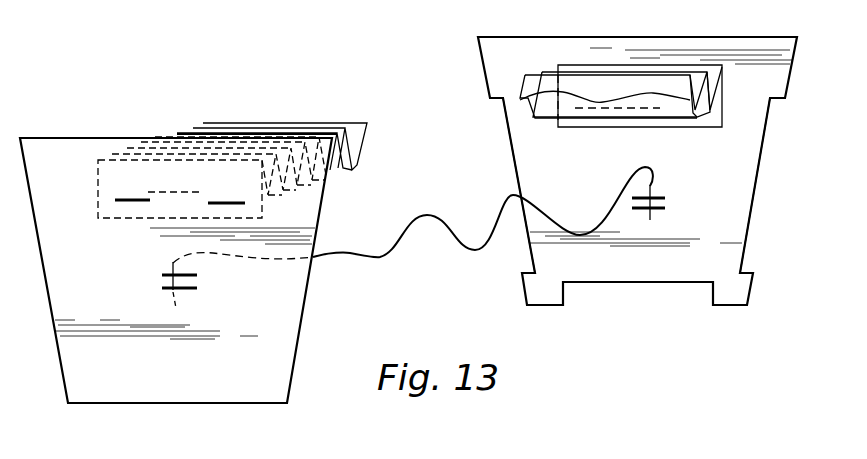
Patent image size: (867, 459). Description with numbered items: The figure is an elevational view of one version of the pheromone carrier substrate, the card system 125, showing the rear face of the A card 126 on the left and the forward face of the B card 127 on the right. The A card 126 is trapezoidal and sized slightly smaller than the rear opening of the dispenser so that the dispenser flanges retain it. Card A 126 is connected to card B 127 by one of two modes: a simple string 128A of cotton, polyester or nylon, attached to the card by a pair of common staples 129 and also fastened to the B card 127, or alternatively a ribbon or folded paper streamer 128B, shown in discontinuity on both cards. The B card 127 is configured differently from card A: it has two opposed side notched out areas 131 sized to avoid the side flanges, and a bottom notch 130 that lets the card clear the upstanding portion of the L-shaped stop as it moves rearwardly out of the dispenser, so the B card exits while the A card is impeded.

The card system 125 is at (603, 372).
The A card 126 is at (152, 368).
The B card 127 is at (572, 172).
The string 128A is at (403, 230).
The folded paper streamer 128B is at (575, 67).
The staples 129 is at (142, 203).
The bottom notch 130 is at (652, 284).
The side notched out areas 131 is at (508, 163).